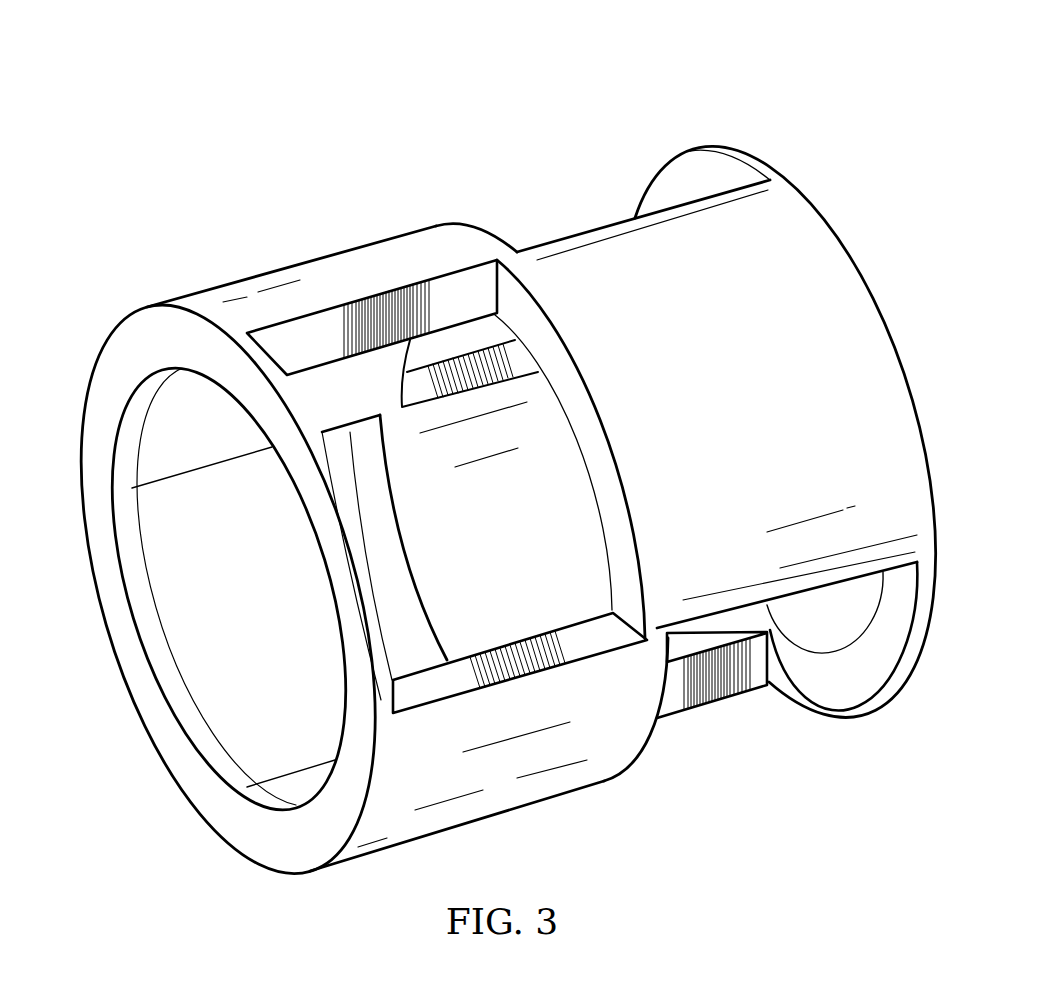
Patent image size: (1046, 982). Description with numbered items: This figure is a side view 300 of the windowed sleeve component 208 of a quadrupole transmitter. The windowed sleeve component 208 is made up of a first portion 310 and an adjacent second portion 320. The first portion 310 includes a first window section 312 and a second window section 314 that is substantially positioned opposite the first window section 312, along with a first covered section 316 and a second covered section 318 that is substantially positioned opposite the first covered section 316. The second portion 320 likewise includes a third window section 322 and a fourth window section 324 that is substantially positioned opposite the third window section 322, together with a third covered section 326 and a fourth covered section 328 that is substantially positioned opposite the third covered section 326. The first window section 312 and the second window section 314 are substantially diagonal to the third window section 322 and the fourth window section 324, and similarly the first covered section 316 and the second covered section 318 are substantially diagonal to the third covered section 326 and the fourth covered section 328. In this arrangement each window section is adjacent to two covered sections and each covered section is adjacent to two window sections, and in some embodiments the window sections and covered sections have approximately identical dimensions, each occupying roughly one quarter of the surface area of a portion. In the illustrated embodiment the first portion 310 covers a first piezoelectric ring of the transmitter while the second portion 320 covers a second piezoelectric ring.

The coupling device 300 is at (239, 90).
The windowed sleeve component 208 is at (125, 338).
The first portion 310 is at (440, 227).
The first window section 312 is at (551, 484).
The second window section 314 is at (211, 640).
The first covered section 316 is at (345, 255).
The second covered section 318 is at (487, 775).
The second portion 320 is at (893, 345).
The third window section 322 is at (579, 208).
The fourth window section 324 is at (734, 738).
The third covered section 326 is at (798, 240).
The fourth covered section 328 is at (742, 628).